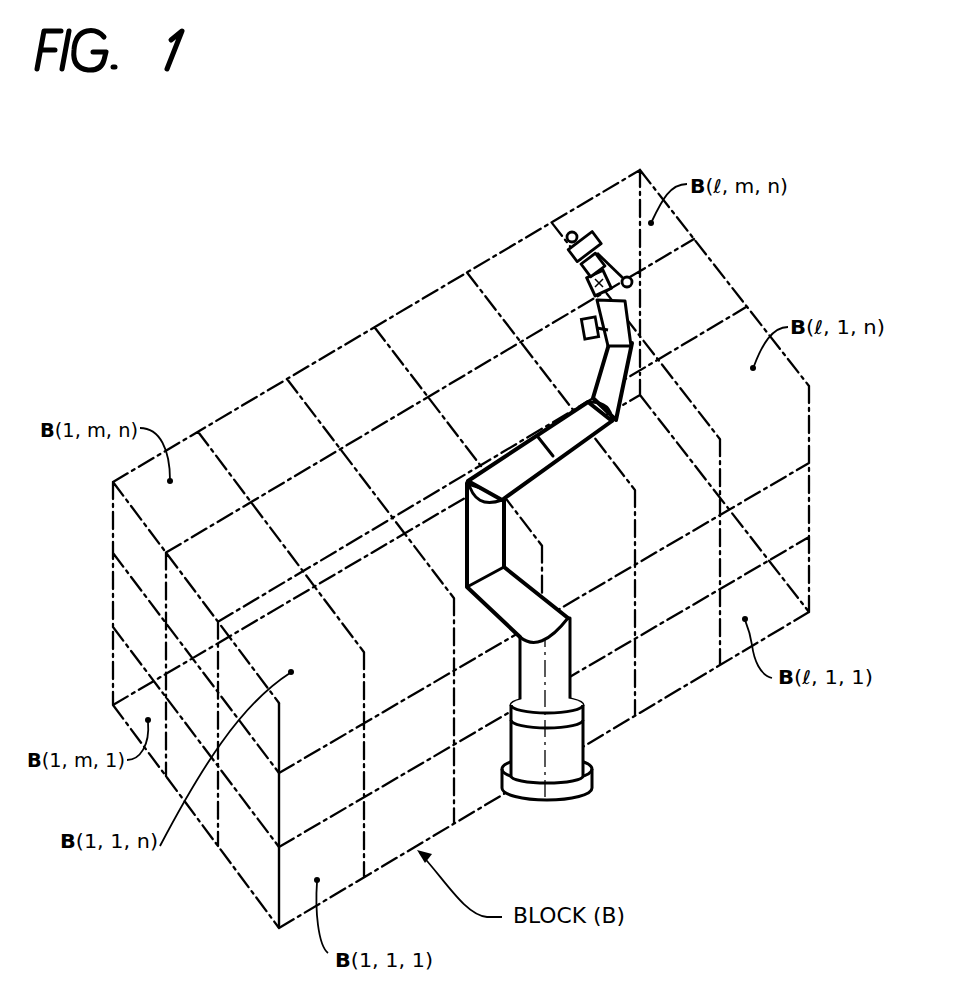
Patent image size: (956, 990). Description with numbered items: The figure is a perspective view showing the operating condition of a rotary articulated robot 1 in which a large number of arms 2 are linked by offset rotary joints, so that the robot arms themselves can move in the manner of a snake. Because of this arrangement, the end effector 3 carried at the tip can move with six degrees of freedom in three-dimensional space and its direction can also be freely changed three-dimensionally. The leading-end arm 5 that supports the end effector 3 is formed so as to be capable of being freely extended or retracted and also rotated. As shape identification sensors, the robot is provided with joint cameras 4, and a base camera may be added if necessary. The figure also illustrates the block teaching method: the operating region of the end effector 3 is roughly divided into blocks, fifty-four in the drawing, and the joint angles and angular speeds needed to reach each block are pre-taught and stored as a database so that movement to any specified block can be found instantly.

The rotary articulated robot 1 is at (563, 738).
The arms 2 is at (463, 516).
The end effector 3 is at (593, 230).
The joint cameras 4 is at (583, 331).
The leading-end arm 5 is at (584, 279).